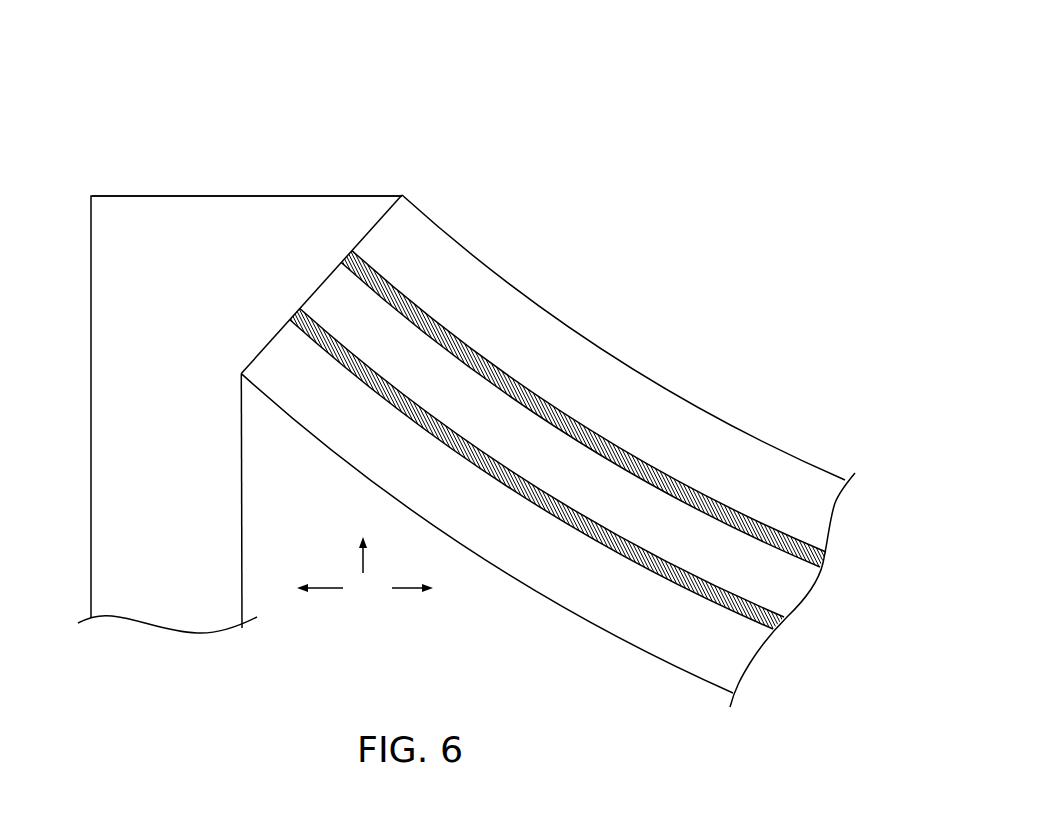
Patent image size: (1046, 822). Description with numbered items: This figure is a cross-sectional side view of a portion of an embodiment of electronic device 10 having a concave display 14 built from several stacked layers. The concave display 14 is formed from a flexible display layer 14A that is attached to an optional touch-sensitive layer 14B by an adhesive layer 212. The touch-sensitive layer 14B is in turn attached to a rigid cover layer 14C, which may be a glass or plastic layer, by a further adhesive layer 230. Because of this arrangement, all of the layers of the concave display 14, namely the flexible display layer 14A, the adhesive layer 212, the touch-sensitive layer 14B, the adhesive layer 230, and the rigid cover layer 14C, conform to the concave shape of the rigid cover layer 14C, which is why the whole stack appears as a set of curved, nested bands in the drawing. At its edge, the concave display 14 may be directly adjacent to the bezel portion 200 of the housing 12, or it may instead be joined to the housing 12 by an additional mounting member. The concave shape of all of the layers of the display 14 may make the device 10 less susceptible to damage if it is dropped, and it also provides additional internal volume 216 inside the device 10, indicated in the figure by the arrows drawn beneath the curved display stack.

The electronic device 10 is at (176, 52).
The housing 12 is at (103, 483).
The bezel portion 200 is at (235, 206).
The concave display 14 is at (663, 194).
The flexible display layer 14A is at (515, 505).
The touch-sensitive layer 14B is at (473, 395).
The rigid cover layer 14C is at (475, 275).
The adhesive layer 212 is at (482, 447).
The adhesive layer 230 is at (461, 348).
The additional internal volume 216 is at (365, 570).